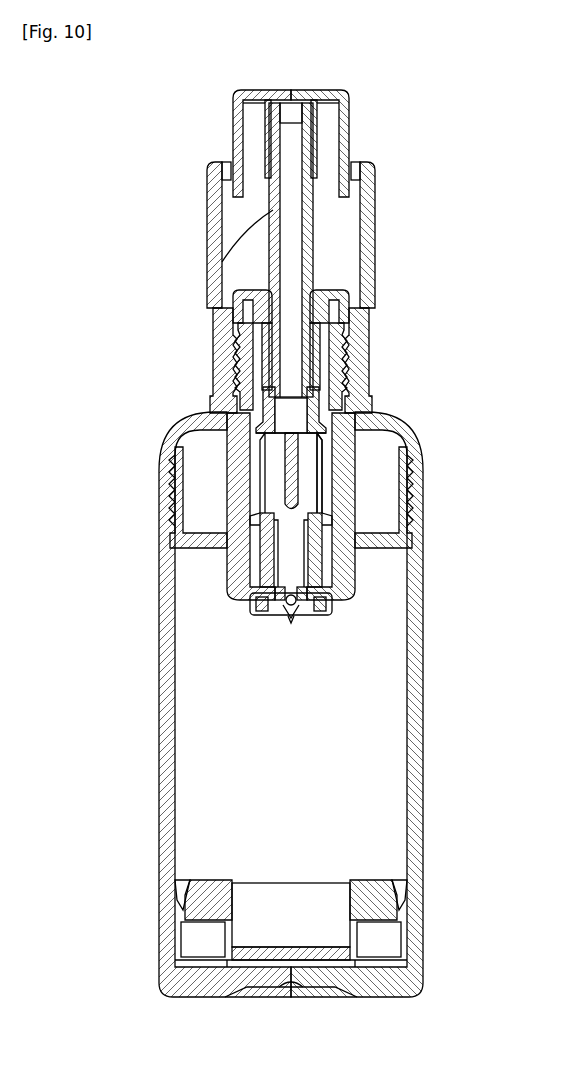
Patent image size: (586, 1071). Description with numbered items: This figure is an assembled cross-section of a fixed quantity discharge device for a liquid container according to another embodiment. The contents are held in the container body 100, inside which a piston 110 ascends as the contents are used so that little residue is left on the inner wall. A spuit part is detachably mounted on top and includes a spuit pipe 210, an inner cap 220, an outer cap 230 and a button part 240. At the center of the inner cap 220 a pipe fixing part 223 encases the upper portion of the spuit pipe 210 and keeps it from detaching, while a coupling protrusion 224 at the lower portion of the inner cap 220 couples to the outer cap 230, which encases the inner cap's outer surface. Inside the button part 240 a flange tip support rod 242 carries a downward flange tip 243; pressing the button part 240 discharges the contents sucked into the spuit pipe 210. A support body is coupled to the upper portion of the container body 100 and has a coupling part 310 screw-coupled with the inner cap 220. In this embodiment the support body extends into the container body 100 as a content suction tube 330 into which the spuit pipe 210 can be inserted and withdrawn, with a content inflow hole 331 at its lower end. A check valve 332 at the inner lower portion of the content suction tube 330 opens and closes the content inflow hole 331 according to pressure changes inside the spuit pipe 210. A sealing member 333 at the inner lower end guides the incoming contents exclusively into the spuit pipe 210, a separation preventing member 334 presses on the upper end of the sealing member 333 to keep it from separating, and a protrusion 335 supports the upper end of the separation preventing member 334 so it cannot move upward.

The container body 100 is at (418, 738).
The piston 110 is at (385, 902).
The spuit pipe 210 is at (328, 455).
The inner cap 220 is at (364, 343).
The pipe fixing part 223 is at (334, 295).
The coupling protrusion 224 is at (357, 363).
The outer cap 230 is at (374, 327).
The button part 240 is at (348, 100).
The flange tip support rod 242 is at (273, 210).
The flange tip 243 is at (272, 411).
The coupling part 310 is at (230, 338).
The content suction tube 330 is at (240, 488).
The content inflow hole 331 is at (291, 618).
The check valve 332 is at (250, 603).
The sealing member 333 is at (267, 565).
The separation preventing member 334 is at (262, 527).
The protrusion 335 is at (330, 515).